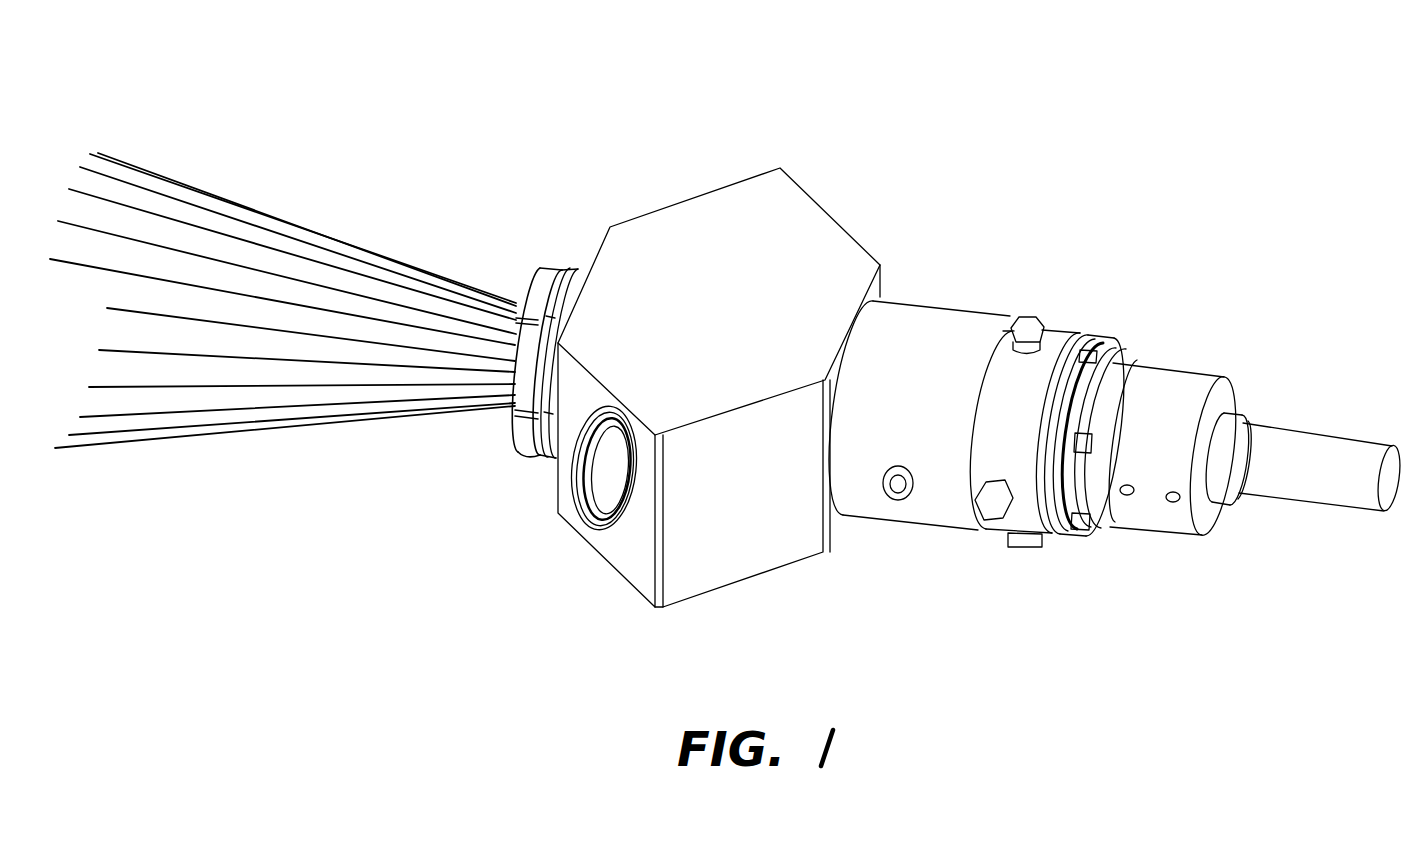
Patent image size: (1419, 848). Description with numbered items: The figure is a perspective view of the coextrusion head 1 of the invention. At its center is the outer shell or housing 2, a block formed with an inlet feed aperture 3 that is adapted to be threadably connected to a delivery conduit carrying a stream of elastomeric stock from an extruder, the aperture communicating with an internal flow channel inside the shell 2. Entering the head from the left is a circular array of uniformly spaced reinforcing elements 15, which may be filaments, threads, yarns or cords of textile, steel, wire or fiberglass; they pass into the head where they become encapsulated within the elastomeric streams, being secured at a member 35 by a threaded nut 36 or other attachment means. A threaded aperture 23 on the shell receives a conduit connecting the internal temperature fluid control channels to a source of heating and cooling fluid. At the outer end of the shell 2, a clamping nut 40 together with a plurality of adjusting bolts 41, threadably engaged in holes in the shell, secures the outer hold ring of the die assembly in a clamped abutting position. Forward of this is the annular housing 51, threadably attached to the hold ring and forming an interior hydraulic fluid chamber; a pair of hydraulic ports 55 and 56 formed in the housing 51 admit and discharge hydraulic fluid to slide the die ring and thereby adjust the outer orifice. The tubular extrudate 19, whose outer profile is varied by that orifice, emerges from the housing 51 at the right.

The coextrusion head 1 is at (827, 207).
The outer shell 2 is at (638, 558).
The inlet feed aperture 3 is at (607, 478).
The reinforcing elements 15 is at (90, 267).
The tubular extrudate 19 is at (1333, 467).
The threaded aperture 23 is at (898, 492).
The member 35 is at (538, 450).
The threaded nut 36 is at (567, 265).
The clamping nut 40 is at (1108, 338).
The adjusting bolts 41 is at (1023, 318).
The annular housing 51 is at (1194, 461).
The hydraulic port 55 is at (1170, 505).
The hydraulic port 56 is at (1122, 500).